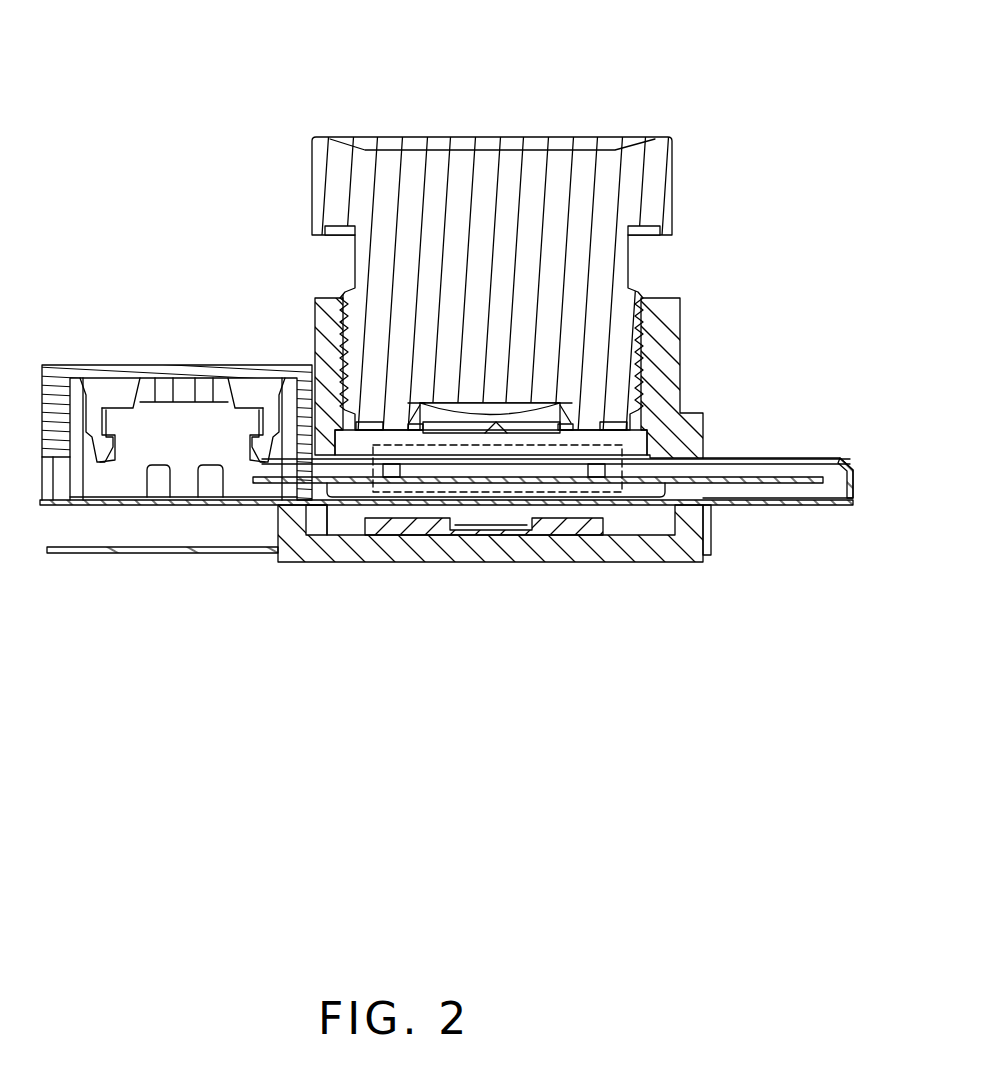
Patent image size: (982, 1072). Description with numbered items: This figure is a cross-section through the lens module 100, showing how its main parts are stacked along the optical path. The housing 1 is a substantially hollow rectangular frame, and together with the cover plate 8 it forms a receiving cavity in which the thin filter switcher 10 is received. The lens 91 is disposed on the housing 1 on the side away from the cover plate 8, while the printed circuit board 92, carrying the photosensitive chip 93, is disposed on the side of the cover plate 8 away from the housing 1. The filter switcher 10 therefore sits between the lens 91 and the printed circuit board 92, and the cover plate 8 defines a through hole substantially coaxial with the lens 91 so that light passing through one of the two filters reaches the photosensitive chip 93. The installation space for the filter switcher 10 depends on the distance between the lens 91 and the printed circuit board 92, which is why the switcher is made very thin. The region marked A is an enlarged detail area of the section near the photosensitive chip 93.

The lens module 100 is at (549, 49).
The housing 1 is at (196, 368).
The lens 91 is at (598, 290).
The filter switcher 10 is at (740, 480).
The cover plate 8 is at (765, 502).
The printed circuit board 92 is at (633, 550).
The photosensitive chip 93 is at (458, 527).
The portion A is at (540, 490).